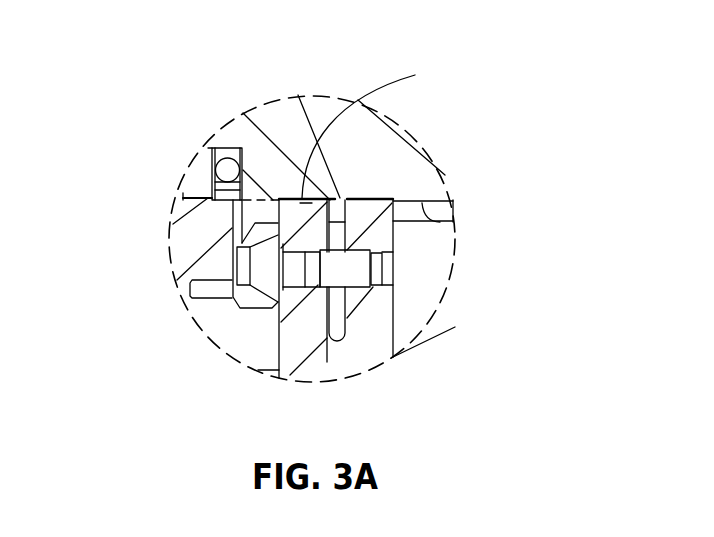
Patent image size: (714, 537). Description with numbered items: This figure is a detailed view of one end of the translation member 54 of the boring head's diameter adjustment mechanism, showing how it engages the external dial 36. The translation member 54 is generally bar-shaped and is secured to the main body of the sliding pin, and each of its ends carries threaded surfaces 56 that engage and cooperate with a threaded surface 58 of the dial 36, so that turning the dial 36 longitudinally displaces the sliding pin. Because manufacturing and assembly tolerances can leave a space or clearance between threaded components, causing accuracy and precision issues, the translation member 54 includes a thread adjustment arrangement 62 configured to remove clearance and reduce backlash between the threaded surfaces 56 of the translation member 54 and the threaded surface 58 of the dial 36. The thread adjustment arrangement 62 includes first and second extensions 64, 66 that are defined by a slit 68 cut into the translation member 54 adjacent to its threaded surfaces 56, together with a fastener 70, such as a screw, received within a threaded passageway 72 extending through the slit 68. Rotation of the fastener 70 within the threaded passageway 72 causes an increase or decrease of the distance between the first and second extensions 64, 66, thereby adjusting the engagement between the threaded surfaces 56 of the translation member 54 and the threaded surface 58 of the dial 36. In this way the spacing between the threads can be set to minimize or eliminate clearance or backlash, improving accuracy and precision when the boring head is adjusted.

The external dial 36 is at (288, 133).
The translation member 54 is at (380, 333).
The threaded surfaces 56 is at (302, 195).
The threaded surface 58 is at (455, 221).
The thread adjustment arrangement 62 is at (343, 197).
The first extension 64 is at (300, 210).
The second extension 66 is at (385, 235).
The slit 68 is at (328, 316).
The fastener 70 is at (297, 263).
The threaded passageway 72 is at (386, 262).